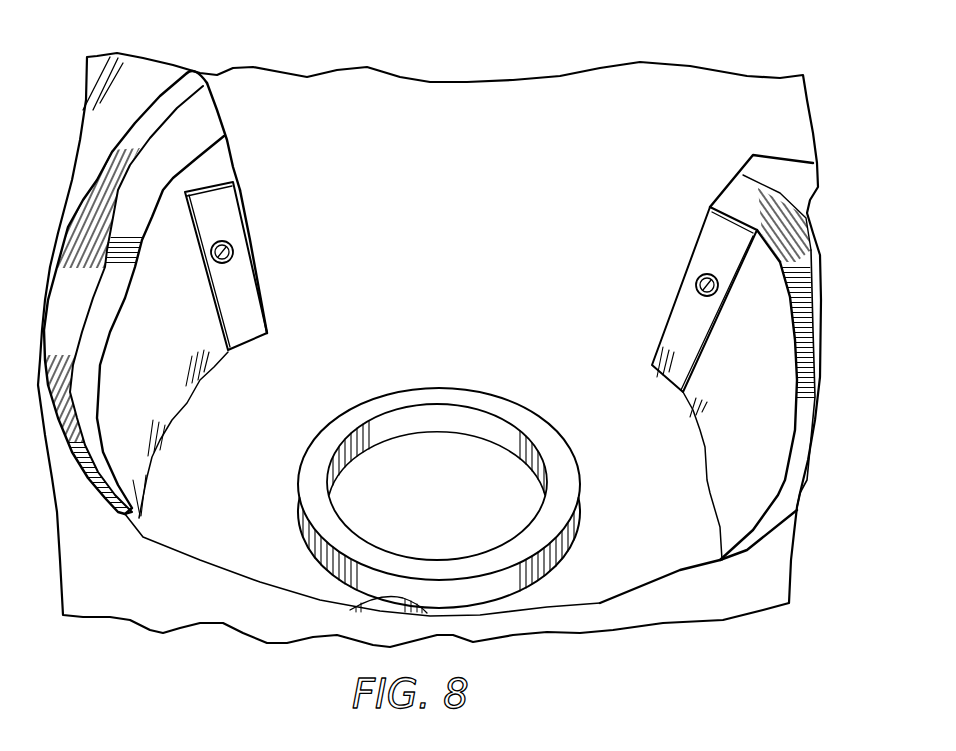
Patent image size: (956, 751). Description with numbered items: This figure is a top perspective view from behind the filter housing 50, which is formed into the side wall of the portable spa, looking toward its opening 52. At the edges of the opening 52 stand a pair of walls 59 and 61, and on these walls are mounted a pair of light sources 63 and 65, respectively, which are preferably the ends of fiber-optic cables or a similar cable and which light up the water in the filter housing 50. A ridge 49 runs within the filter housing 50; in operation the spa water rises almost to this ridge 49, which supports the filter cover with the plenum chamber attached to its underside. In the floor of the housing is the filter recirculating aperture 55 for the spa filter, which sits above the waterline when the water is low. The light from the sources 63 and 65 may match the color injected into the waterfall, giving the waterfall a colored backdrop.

The ridge 49 is at (787, 357).
The filter housing 50 is at (142, 260).
The opening 52 is at (429, 337).
The filter recirculating aperture 55 is at (439, 463).
The wall 59 is at (254, 254).
The wall 61 is at (695, 285).
The light source 63 is at (271, 243).
The light source 65 is at (662, 262).